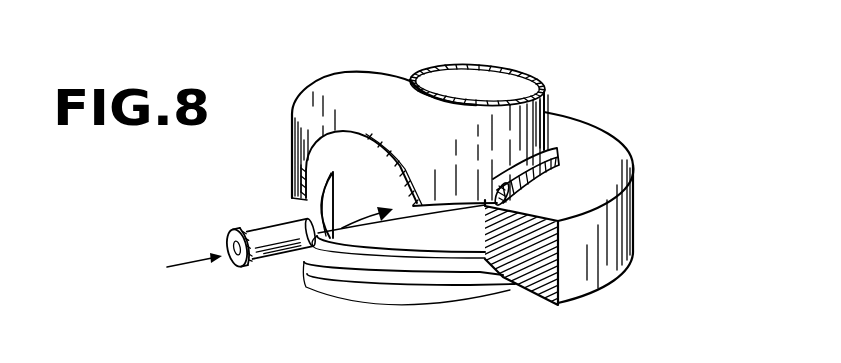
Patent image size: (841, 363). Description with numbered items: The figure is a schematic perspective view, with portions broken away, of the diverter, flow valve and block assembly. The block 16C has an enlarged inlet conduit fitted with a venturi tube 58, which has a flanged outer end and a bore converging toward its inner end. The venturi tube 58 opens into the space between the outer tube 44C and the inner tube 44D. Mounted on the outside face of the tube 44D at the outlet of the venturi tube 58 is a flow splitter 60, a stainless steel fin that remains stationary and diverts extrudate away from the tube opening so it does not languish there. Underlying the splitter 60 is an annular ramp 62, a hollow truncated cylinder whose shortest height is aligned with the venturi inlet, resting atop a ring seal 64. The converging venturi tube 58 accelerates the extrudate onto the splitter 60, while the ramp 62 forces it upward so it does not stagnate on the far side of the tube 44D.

The tube 44C is at (520, 121).
The tube 44D is at (352, 162).
The flow splitter 60 is at (323, 206).
The venturi tube 58 is at (265, 257).
The annular ramp 62 is at (455, 247).
The ring seal 64 is at (342, 295).
The block 16C is at (608, 257).